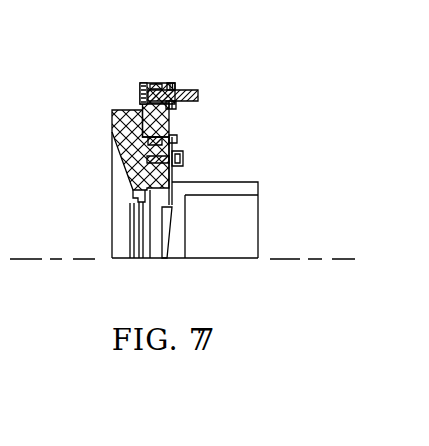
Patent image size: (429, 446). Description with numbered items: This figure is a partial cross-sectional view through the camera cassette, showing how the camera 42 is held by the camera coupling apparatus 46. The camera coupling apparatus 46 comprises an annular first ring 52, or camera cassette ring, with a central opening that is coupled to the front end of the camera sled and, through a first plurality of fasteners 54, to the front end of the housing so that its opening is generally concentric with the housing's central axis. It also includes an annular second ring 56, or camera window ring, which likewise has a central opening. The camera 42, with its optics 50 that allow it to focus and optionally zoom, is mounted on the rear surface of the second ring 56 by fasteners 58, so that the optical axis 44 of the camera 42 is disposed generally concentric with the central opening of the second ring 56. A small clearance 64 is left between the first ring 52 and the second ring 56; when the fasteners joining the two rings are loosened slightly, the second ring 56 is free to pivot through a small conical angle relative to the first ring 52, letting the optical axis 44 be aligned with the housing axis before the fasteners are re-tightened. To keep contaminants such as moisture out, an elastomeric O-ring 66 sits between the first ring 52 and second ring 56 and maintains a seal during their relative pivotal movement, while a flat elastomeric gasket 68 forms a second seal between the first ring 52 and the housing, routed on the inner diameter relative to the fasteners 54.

The camera 42 is at (240, 188).
The optical axis 44 is at (25, 258).
The camera coupling apparatus 46 is at (119, 72).
The optics 50 is at (153, 220).
The first ring 52 is at (168, 83).
The first plurality of fasteners 54 is at (199, 97).
The second ring 56 is at (112, 110).
The fasteners 58 is at (183, 158).
The clearance 64 is at (175, 140).
The elastomeric O-ring 66 is at (169, 130).
The gasket 68 is at (175, 86).